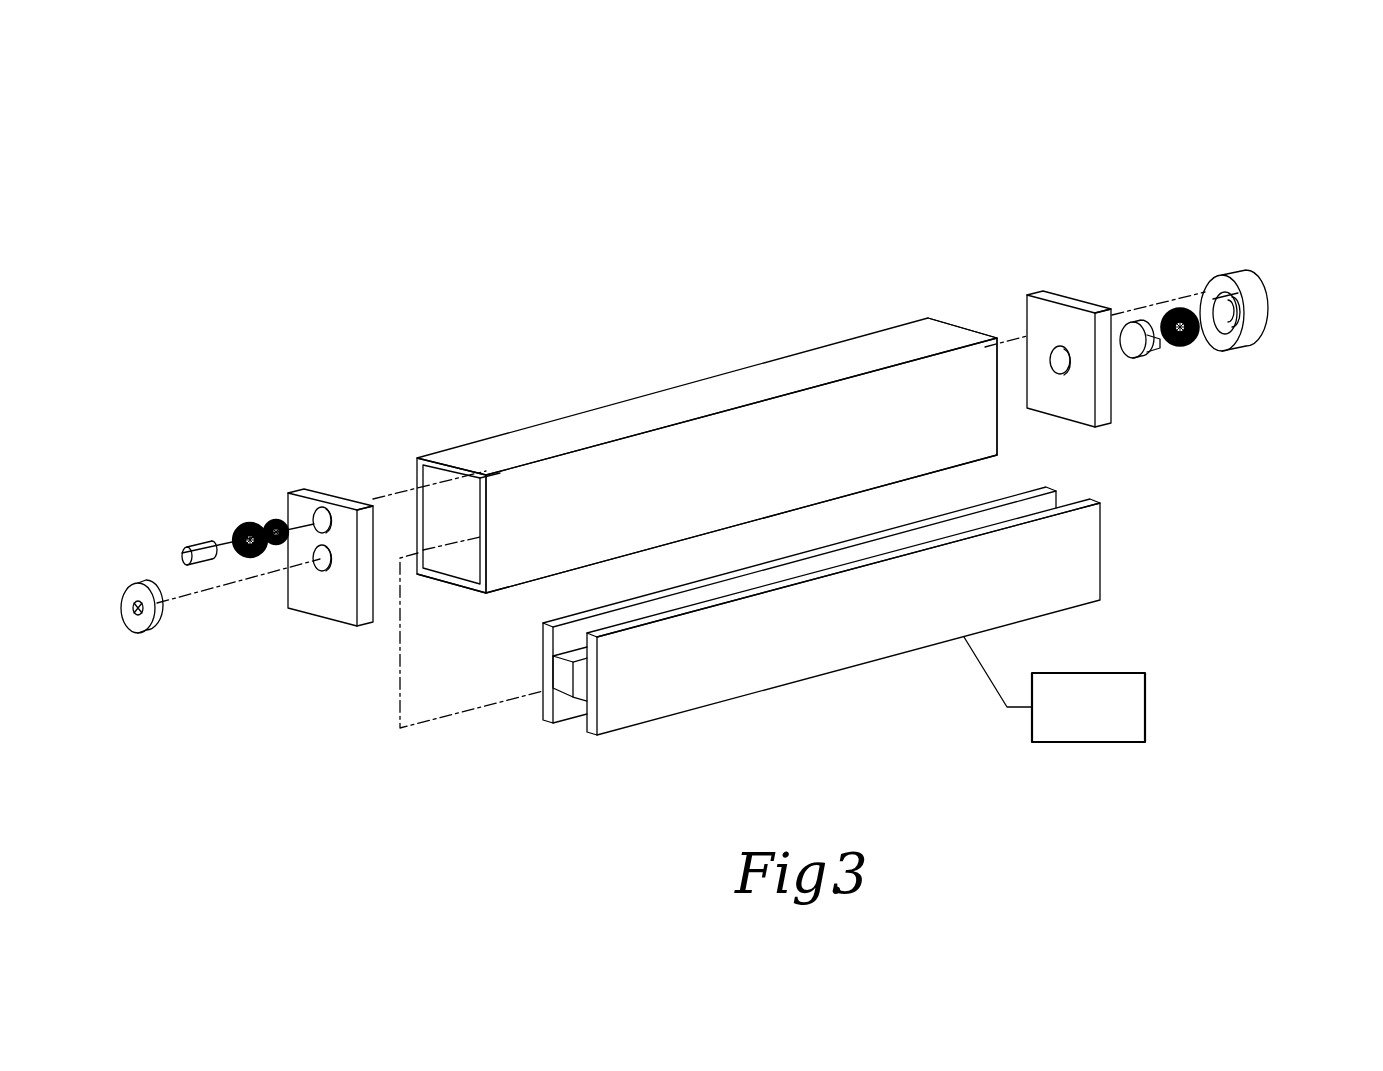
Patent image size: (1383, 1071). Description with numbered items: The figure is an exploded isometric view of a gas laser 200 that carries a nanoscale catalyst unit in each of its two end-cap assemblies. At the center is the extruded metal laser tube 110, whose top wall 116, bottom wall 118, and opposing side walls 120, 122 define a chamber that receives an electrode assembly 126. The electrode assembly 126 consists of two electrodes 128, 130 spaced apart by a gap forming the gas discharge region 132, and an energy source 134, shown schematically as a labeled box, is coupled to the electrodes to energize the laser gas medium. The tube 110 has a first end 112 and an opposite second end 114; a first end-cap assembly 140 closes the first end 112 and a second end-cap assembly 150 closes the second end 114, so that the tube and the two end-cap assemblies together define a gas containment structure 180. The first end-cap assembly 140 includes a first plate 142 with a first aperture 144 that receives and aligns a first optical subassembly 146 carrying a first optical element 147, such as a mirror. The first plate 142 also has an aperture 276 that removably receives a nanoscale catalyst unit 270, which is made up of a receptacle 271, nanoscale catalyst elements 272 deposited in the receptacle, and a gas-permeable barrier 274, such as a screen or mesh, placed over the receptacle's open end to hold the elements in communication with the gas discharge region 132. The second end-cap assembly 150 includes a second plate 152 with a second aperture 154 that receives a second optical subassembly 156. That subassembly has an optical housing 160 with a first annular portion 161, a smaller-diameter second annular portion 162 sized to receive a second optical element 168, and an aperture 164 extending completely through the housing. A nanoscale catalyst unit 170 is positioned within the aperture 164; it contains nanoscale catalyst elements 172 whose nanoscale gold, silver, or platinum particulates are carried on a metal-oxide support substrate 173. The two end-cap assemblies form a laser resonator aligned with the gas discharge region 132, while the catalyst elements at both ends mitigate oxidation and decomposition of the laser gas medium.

The gas laser 200 is at (1047, 147).
The laser tube 110 is at (707, 377).
The first end 112 is at (443, 431).
The second end 114 is at (950, 311).
The top wall 116 is at (565, 437).
The bottom wall 118 is at (447, 585).
The side wall 120 is at (417, 472).
The side wall 122 is at (522, 535).
The electrode assembly 126 is at (801, 694).
The electrode 128 is at (548, 705).
The electrode 130 is at (593, 720).
The gas discharge region 132 is at (571, 728).
The energy source 134 is at (1103, 742).
The first end-cap assembly 140 is at (275, 721).
The first plate 142 is at (300, 487).
The first aperture 144 is at (318, 577).
The first optical subassembly 146 is at (111, 634).
The first optical element 147 is at (142, 623).
The second end-cap assembly 150 is at (1204, 469).
The second plate 152 is at (1044, 291).
The second aperture 154 is at (1060, 375).
The second optical subassembly 156 is at (1272, 347).
The optical housing 160 is at (1263, 293).
The first annular portion 161 is at (1242, 338).
The second annular portion 162 is at (1227, 335).
The aperture 164 is at (1221, 306).
The second optical element 168 is at (1137, 352).
The nanoscale catalyst unit 170 is at (1165, 356).
The nanoscale catalyst elements 172 is at (1195, 338).
The metal-oxide support substrate 173 is at (1190, 330).
The gas containment structure 180 is at (642, 377).
The nanoscale catalyst unit 270 is at (232, 568).
The nanoscale catalyst receptacle 271 is at (182, 553).
The nanoscale catalyst elements 272 is at (252, 553).
The gas-permeable barrier 274 is at (275, 523).
The aperture 276 is at (326, 517).